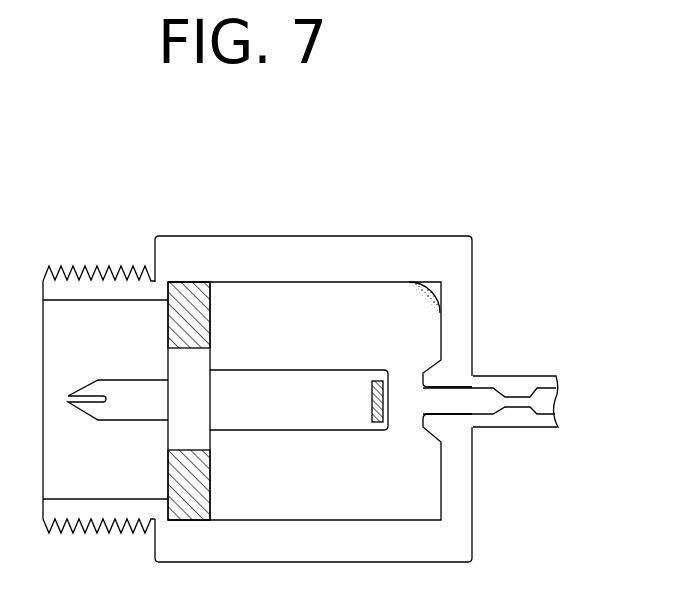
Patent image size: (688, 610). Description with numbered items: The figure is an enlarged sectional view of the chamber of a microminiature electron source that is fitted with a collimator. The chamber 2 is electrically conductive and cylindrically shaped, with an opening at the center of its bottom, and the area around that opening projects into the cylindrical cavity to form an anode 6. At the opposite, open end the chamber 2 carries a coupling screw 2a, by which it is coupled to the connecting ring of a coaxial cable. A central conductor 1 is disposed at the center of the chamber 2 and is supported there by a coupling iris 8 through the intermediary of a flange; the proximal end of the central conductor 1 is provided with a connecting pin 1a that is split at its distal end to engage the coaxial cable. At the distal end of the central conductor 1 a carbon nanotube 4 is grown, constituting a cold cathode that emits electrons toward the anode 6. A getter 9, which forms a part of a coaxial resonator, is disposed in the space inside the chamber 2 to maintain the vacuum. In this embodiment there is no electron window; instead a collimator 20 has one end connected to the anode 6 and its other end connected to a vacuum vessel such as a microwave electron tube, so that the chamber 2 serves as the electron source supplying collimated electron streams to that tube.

The central conductor 1 is at (288, 370).
The connecting pin 1a is at (122, 384).
The chamber 2 is at (384, 247).
The coupling screw 2a is at (106, 270).
The carbon nanotube 4 is at (372, 404).
The anode 6 is at (426, 418).
The coupling iris 8 is at (195, 320).
The getter 9 is at (423, 293).
The collimator 20 is at (512, 385).